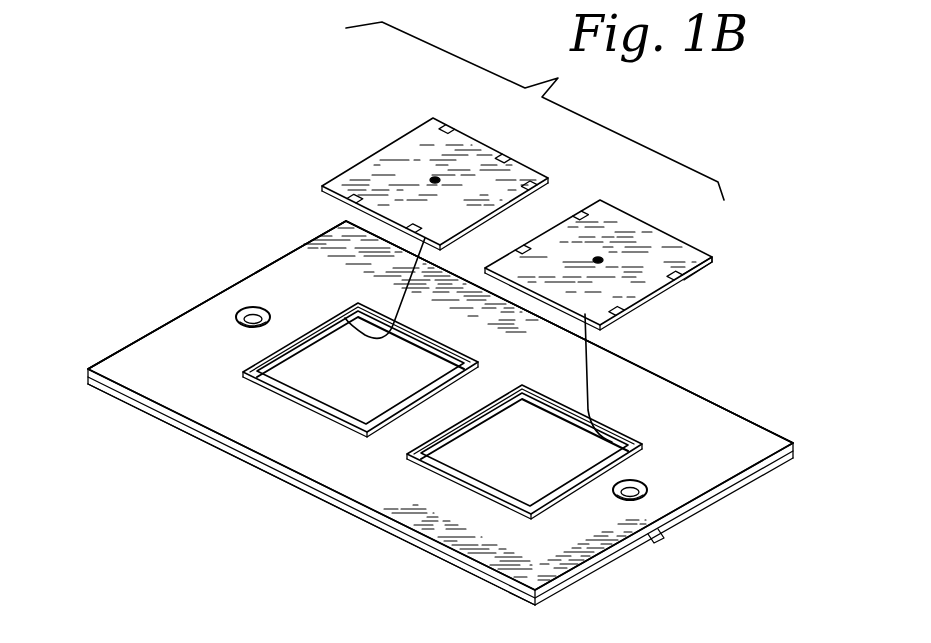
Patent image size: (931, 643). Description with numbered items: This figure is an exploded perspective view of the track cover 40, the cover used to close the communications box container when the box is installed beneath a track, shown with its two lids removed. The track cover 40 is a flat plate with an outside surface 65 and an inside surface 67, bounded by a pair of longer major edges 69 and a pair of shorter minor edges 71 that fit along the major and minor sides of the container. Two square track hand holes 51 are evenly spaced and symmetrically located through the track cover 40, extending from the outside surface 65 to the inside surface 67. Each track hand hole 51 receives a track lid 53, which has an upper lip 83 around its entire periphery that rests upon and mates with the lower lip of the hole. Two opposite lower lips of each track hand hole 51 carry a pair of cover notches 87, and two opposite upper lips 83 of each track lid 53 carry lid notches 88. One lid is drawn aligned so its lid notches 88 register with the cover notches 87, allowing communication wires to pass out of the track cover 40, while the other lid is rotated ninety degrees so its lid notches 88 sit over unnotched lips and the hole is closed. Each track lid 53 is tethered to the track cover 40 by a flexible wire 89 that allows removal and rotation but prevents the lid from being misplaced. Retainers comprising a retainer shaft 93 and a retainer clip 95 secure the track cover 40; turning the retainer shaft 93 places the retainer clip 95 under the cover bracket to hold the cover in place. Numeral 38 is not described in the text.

The mounting plate 38 is at (745, 486).
The track cover 40 is at (696, 382).
The track hand hole 51 is at (433, 363).
The track lid 53 is at (598, 215).
The outside surface 65 is at (275, 290).
The inside surface 67 is at (192, 440).
The major edge 69 is at (633, 361).
The minor edge 71 is at (168, 324).
The upper lip 83 is at (330, 321).
The cover notch 87 is at (387, 412).
The lid notch 88 is at (703, 254).
The flexible wire 89 is at (405, 303).
The retainer shaft 93 is at (635, 489).
The retainer clip 95 is at (658, 547).